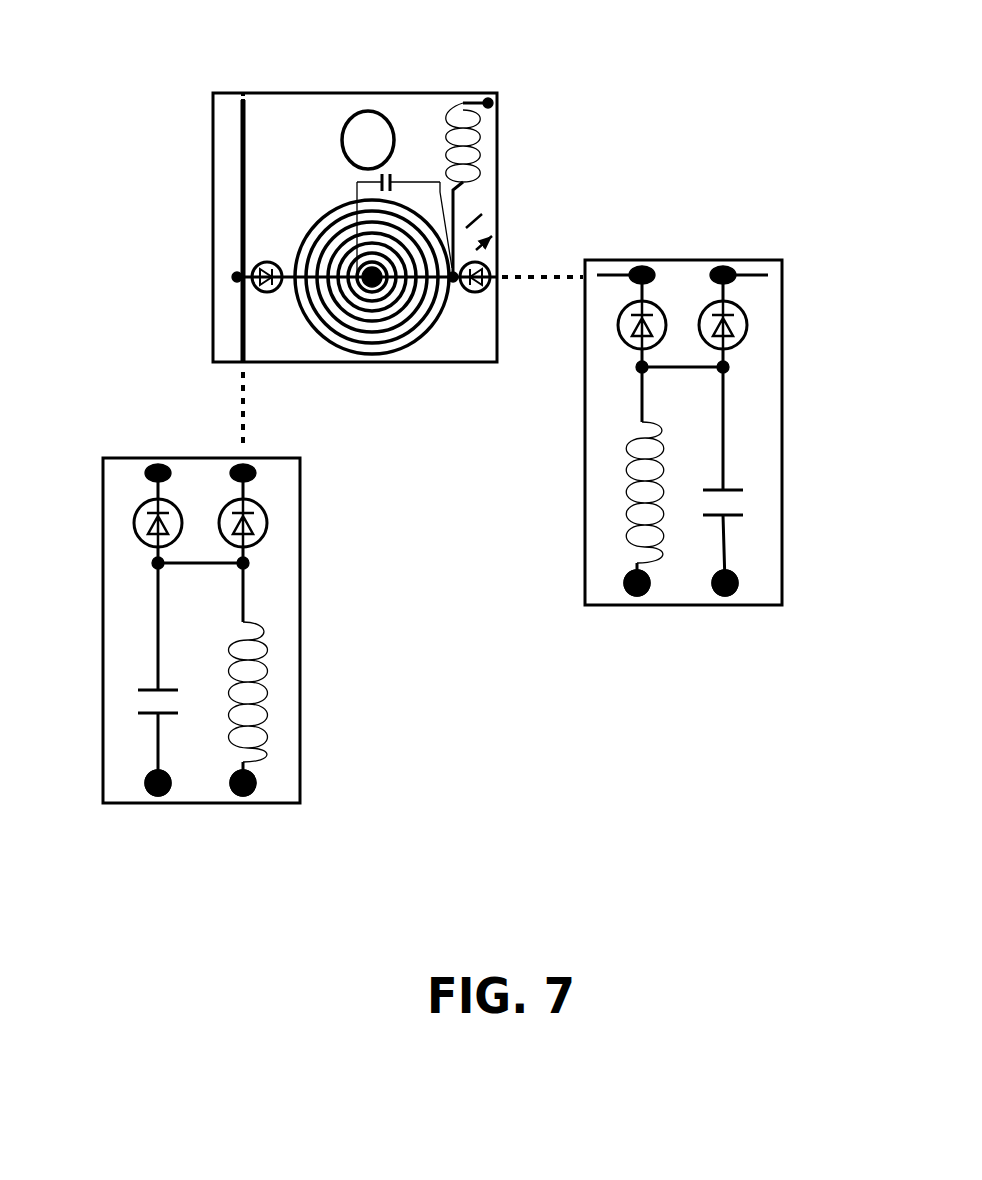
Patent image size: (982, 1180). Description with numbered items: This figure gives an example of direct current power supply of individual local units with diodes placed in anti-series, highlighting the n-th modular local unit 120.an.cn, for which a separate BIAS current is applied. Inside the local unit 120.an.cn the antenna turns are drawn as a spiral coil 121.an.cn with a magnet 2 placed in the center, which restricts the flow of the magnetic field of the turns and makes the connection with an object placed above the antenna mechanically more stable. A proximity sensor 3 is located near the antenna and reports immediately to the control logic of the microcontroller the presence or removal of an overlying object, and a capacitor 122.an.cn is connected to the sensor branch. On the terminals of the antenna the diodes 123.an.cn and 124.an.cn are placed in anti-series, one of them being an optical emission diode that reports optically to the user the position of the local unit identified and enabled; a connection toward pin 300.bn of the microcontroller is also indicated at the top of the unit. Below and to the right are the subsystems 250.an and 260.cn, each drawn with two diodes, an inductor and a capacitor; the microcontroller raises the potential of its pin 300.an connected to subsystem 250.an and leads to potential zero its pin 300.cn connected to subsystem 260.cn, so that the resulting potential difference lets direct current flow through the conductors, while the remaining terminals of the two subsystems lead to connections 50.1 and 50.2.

The modular local unit 120.an.cn is at (253, 137).
The proximity sensor 3 is at (345, 105).
The capacitor of cell an.cn 122.an.cn is at (400, 163).
The coil (spiral inductor) of cell an.cn 121.an.cn is at (409, 349).
The left diode of cell an.cn 123.an.cn is at (263, 300).
The light emitting diode of cell an.cn 124.an.cn is at (491, 258).
The magnet 2 is at (384, 284).
The subsystem 250.an is at (304, 650).
The subsystem 260.cn is at (586, 462).
The pin of the microcontroller 300.bn is at (506, 107).
The pin of the microcontroller 300.an is at (315, 845).
The pin of the microcontroller 300.cn is at (619, 586).
The connection to 50.1 is at (137, 796).
The connection to 50.2 is at (746, 586).